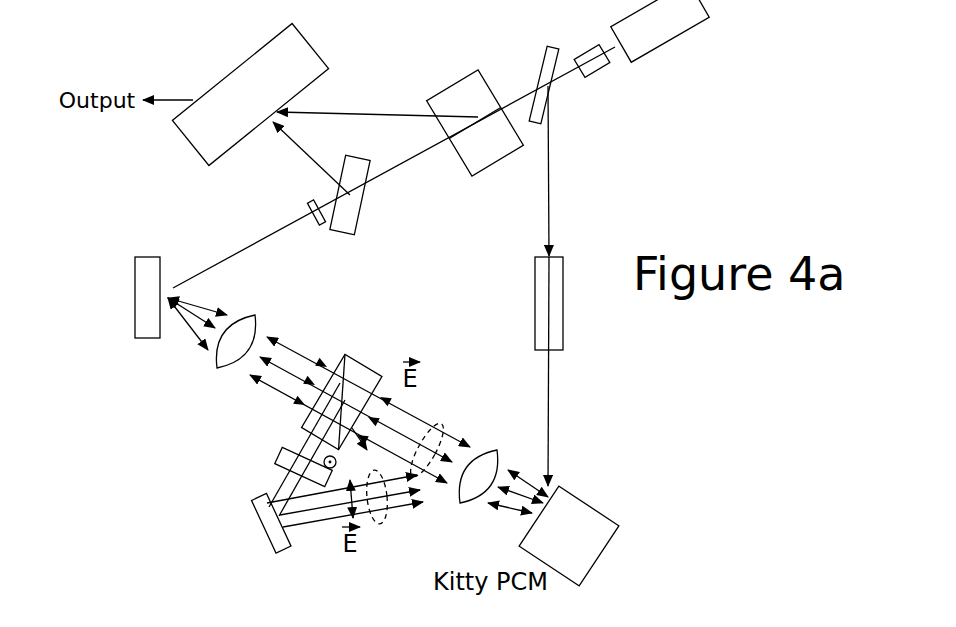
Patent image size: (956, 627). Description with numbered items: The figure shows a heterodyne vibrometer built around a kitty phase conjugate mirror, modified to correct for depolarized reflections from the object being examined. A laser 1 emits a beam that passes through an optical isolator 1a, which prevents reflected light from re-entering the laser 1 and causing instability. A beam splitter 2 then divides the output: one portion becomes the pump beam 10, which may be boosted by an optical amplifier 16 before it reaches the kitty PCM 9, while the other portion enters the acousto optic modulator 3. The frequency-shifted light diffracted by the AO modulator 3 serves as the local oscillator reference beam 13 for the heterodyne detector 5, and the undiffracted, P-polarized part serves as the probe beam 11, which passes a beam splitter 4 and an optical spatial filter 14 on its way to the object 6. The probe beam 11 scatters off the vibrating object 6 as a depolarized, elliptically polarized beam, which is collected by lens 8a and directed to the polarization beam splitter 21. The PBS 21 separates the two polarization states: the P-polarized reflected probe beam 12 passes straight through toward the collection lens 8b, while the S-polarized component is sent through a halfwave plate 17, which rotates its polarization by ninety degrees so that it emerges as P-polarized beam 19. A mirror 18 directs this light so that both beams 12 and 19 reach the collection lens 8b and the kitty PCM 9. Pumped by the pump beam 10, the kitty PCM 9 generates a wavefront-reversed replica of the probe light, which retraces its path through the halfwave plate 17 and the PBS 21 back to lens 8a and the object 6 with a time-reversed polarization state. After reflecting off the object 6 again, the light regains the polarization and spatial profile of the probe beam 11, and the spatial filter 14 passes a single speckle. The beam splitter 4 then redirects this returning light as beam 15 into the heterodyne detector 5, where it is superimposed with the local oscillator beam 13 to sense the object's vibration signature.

The laser 1 is at (657, 45).
The optical isolator 1a is at (595, 66).
The beam splitter 2 is at (545, 72).
The acousto optic modulator 3 is at (452, 92).
The beam splitter 4 is at (352, 217).
The heterodyne detector 5 is at (222, 78).
The object 6 is at (152, 268).
The lens 8a is at (228, 352).
The collection lens 8b is at (468, 485).
The kitty PCM 9 is at (569, 536).
The pump beam 10 is at (553, 180).
The probe beam 11 is at (295, 222).
The reflected probe beam 12 is at (445, 430).
The local oscillator reference beam 13 is at (360, 120).
The optical spatial filter 14 is at (322, 227).
The beam 15 is at (299, 150).
The optical amplifier 16 is at (555, 330).
The halfwave plate 17 is at (278, 453).
The mirror 18 is at (280, 543).
The beam 19 is at (380, 520).
The polarization beam splitter 21 is at (357, 368).